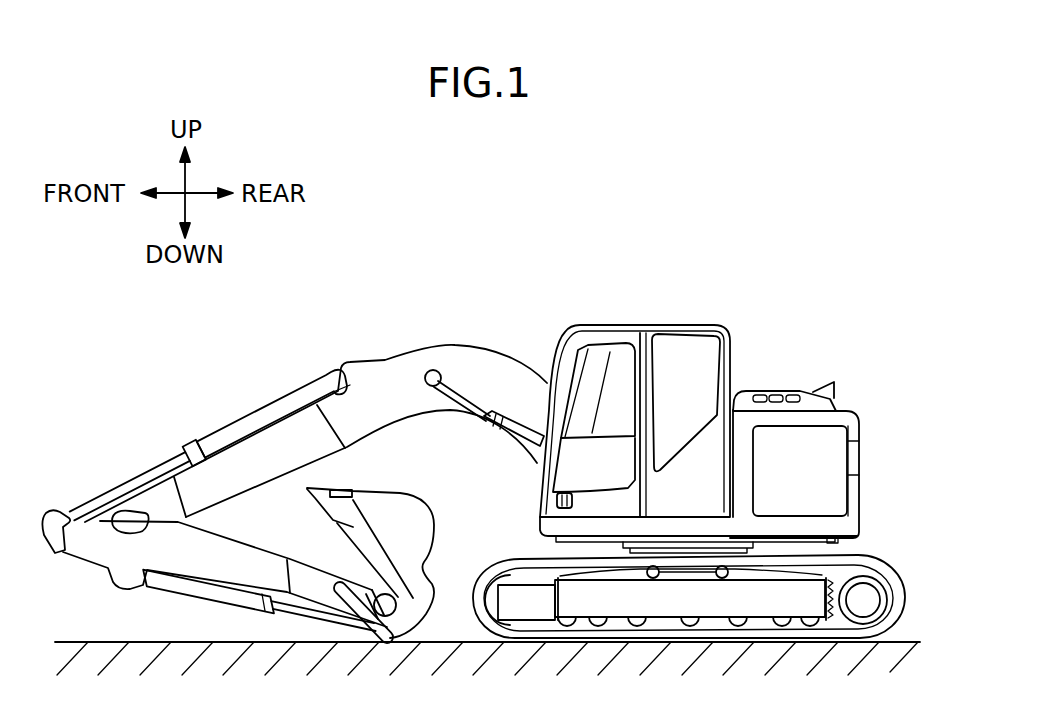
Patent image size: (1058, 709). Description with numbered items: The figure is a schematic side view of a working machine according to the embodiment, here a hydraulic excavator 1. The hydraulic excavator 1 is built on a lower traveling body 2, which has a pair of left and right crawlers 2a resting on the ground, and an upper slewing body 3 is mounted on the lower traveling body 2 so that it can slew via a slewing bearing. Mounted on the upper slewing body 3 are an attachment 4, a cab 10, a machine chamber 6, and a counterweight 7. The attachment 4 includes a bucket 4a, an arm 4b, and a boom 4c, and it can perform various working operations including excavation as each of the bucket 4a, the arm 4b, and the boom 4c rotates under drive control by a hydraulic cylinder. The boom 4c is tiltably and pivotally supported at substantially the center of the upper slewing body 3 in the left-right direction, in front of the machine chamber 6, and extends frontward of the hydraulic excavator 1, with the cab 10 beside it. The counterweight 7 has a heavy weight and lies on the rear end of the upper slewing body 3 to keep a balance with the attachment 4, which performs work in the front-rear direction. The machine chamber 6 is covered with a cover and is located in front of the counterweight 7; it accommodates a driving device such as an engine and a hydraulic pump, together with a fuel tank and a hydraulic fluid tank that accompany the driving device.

The hydraulic excavator 1 is at (503, 400).
The lower traveling body 2 is at (915, 594).
The crawler 2a is at (490, 567).
The upper slewing body 3 is at (915, 432).
The attachment 4 is at (384, 320).
The bucket 4a is at (427, 503).
The arm 4b is at (257, 550).
The boom 4c is at (468, 345).
The machine chamber 6 is at (778, 398).
The counterweight 7 is at (857, 515).
The cab 10 is at (663, 325).